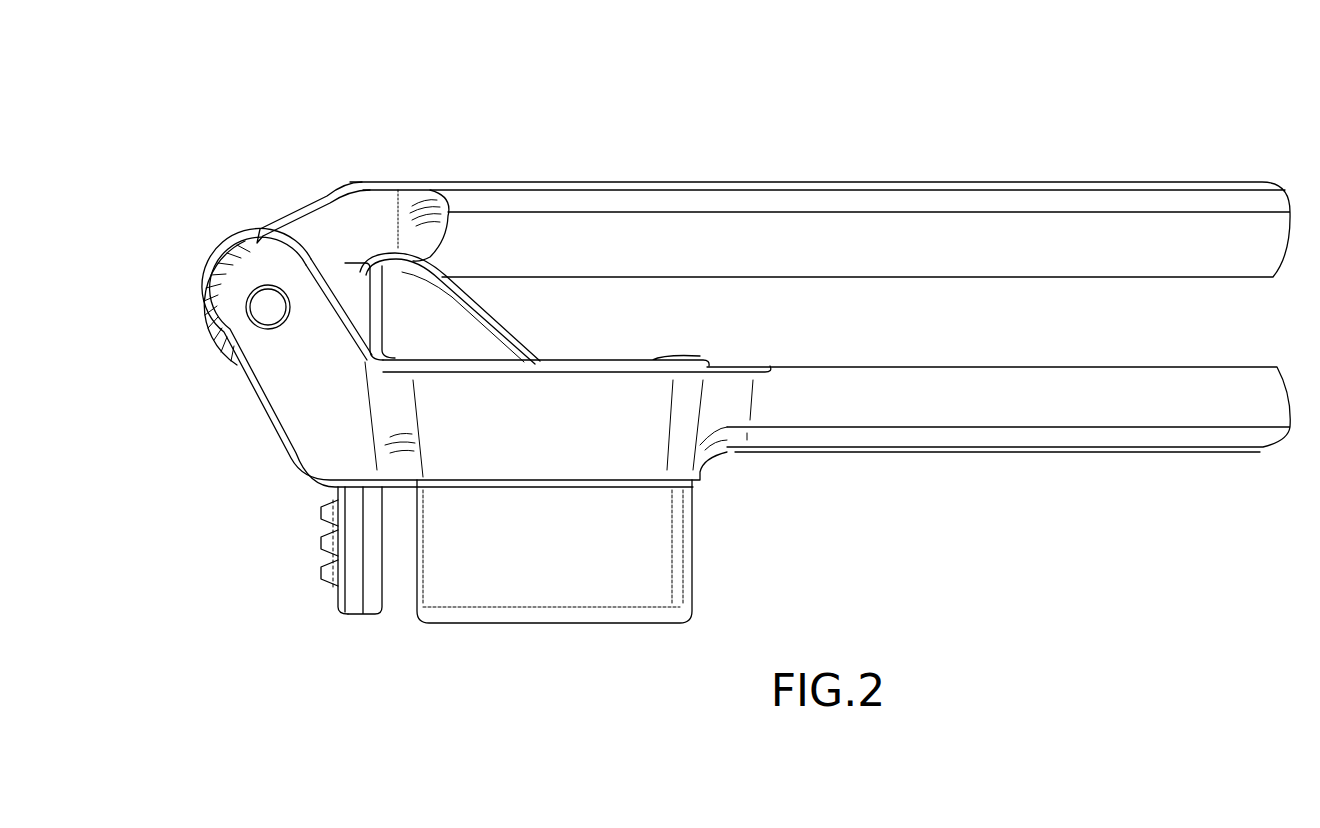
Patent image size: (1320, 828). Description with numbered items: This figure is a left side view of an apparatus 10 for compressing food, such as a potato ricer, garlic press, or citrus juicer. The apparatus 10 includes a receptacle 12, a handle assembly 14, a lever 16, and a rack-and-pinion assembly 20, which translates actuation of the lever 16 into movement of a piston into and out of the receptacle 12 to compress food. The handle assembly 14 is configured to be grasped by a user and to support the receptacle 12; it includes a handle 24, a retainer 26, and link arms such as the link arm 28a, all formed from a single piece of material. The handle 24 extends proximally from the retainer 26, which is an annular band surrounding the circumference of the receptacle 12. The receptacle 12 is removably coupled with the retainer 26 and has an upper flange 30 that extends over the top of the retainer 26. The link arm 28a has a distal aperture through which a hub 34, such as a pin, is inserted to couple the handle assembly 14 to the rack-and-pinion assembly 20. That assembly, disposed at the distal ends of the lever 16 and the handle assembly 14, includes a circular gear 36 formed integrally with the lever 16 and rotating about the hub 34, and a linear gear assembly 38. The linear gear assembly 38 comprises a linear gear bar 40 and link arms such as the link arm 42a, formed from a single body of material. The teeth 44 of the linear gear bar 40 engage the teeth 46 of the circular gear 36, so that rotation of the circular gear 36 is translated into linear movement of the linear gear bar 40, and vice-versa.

The apparatus 10 is at (657, 101).
The rack-and-pinion assembly 20 is at (200, 190).
The lever 16 is at (932, 256).
The linear gear assembly 38 is at (384, 250).
The link arm 42a is at (466, 322).
The link arm 28a is at (288, 375).
The teeth 46 is at (210, 268).
The hub 34 is at (260, 307).
The circular gear 36 is at (210, 336).
The handle assembly 14 is at (958, 481).
The handle 24 is at (932, 404).
The upper flange 30 is at (655, 360).
The retainer 26 is at (507, 434).
The receptacle 12 is at (507, 556).
The linear gear bar 40 is at (355, 602).
The teeth 44 is at (318, 513).